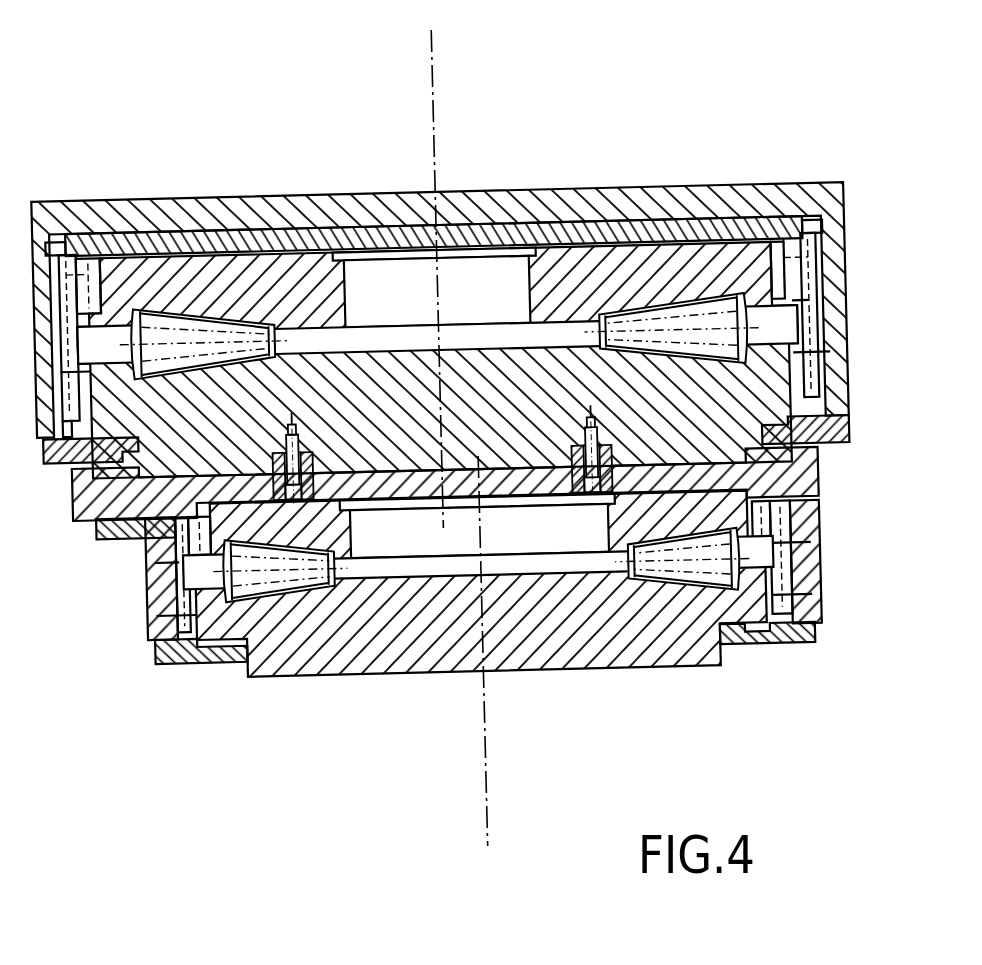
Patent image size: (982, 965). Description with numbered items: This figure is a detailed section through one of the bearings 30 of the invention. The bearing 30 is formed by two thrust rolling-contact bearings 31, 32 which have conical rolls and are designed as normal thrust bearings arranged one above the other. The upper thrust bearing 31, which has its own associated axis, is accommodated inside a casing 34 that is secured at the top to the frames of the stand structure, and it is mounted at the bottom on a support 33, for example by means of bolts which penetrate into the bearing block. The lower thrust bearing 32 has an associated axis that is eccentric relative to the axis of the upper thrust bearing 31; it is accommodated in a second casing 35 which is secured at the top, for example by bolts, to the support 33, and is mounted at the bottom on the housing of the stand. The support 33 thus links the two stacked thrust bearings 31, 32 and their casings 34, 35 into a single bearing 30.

The bearing 30 is at (465, 423).
The upper thrust bearing 31 is at (486, 306).
The lower thrust bearing 32 is at (536, 545).
The support 33 is at (797, 468).
The casing 34 is at (692, 197).
The second casing 35 is at (150, 592).